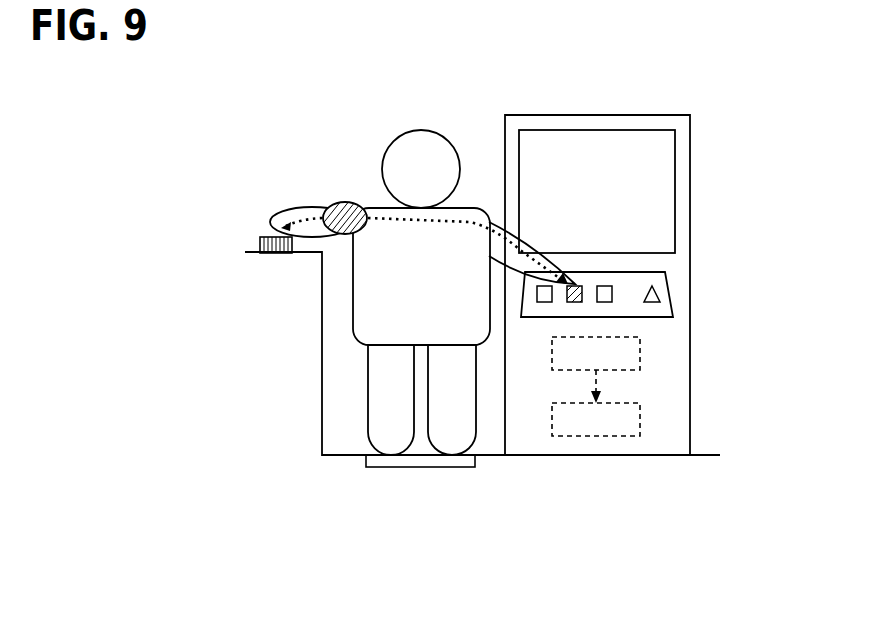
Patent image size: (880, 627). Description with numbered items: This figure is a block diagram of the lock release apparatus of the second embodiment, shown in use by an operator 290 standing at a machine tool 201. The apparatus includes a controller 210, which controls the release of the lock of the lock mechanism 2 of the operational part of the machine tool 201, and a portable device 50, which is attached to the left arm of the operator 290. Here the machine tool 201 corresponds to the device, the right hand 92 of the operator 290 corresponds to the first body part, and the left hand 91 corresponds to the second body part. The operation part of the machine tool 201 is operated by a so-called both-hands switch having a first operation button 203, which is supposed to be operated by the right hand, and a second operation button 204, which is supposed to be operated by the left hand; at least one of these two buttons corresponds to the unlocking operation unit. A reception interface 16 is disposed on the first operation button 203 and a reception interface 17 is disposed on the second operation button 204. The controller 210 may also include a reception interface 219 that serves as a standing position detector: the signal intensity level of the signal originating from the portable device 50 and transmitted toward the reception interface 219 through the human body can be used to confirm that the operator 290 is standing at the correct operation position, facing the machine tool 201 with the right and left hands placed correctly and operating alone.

The lock mechanism 2 is at (640, 419).
The reception interface 16 is at (267, 237).
The reception interface 17 is at (580, 284).
The portable device 50 is at (344, 203).
The left hand 91 is at (272, 218).
The right hand 92 is at (575, 283).
The machine tool 201 is at (561, 115).
The first operation button 203 is at (277, 248).
The second operation button 204 is at (582, 292).
The controller 210 is at (640, 353).
The reception interface 219 is at (418, 467).
The operator 290 is at (418, 129).